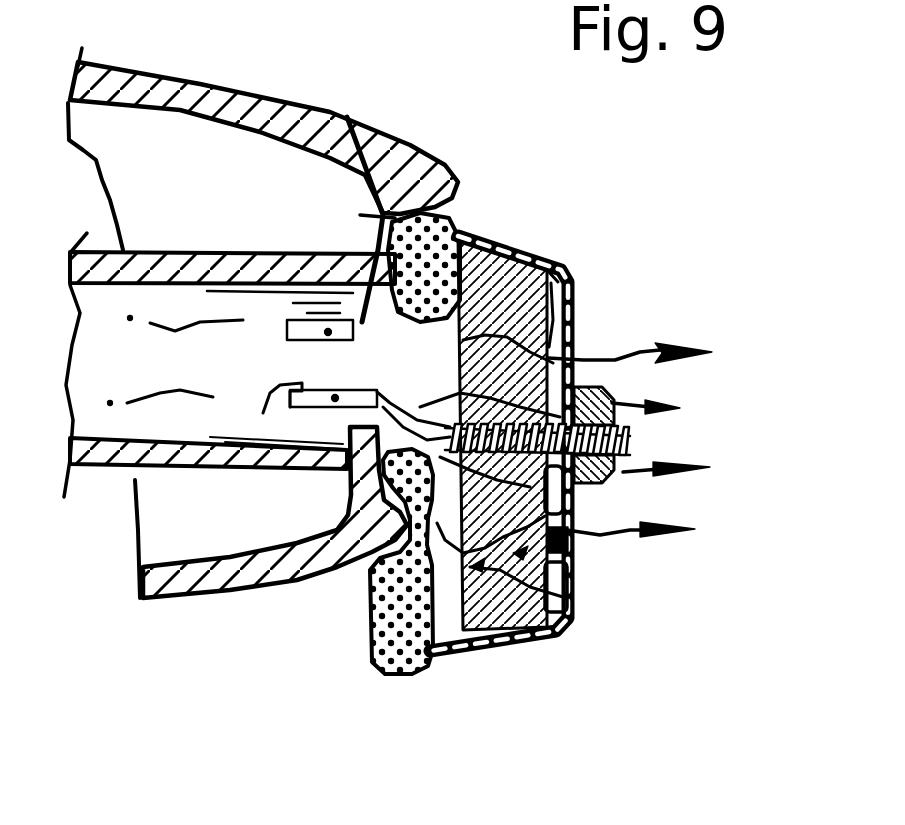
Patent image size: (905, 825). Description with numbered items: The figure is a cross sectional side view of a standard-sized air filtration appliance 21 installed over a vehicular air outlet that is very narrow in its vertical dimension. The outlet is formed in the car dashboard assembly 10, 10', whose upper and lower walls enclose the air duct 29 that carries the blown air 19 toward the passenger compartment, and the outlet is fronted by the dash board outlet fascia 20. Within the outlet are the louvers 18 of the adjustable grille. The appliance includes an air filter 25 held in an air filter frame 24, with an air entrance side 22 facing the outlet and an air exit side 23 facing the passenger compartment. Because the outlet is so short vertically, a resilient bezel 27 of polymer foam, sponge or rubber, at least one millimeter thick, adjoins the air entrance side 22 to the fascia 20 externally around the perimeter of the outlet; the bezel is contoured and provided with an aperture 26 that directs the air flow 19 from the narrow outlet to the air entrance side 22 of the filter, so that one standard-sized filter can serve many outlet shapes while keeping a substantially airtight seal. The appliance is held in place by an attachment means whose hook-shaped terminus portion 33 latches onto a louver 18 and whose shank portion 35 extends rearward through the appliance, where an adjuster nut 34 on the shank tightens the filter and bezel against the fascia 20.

The car dashboard assembly 10 is at (261, 272).
The car dashboard assembly 10' is at (223, 557).
The louvers of adjustable grille 18 is at (280, 325).
The blown air 19 is at (673, 370).
The dash board outlet fascia 20 is at (333, 252).
The overall air-filtration appliance 21 is at (617, 305).
The air entrance side of air filter 22 is at (545, 585).
The air exit side of air filter 23 is at (545, 516).
The air filter frame 24 is at (580, 333).
The air filter 25 is at (540, 549).
The aperture in resilient bezel 26 is at (347, 117).
The resilient bezel 27 is at (443, 212).
The air duct 29 is at (187, 247).
The hook-shaped terminus portion of the attachment means 33 is at (263, 413).
The adjuster nut 34 is at (603, 400).
The shank portion of an attachment means 35 is at (478, 430).